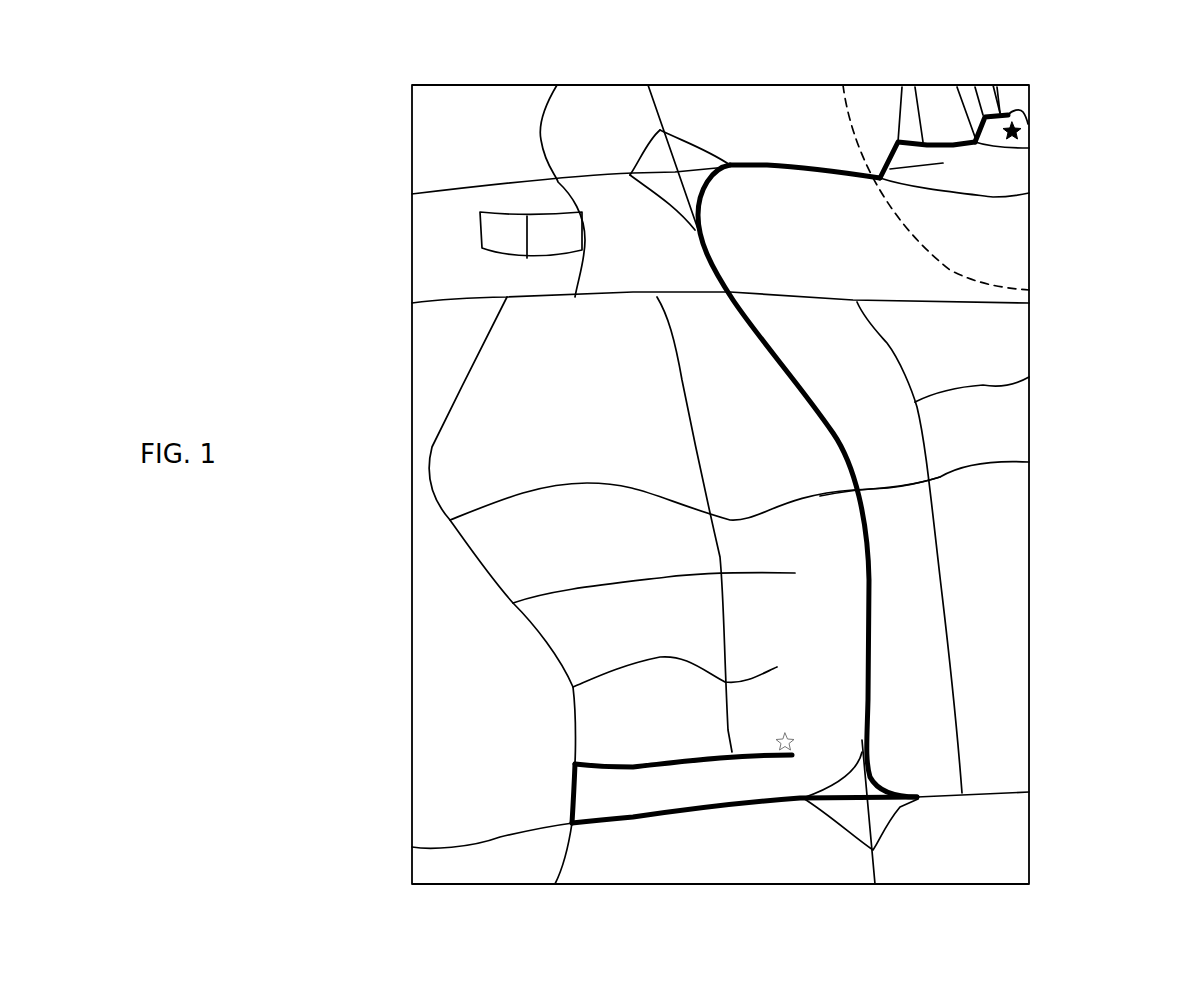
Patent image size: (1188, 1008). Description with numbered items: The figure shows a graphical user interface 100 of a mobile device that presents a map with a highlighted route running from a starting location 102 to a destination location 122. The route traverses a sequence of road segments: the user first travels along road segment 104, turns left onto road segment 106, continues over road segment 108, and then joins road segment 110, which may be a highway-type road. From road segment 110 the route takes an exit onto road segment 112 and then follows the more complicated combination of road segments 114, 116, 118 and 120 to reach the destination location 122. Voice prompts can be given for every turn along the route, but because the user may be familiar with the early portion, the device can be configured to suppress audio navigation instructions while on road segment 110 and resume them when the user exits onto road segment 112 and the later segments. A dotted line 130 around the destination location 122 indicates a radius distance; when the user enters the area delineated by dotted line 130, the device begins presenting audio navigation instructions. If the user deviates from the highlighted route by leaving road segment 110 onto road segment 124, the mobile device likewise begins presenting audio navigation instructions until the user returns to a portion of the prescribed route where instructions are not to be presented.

The graphical user interface 100 is at (1133, 302).
The starting location 102 is at (790, 731).
The road segment 104 is at (680, 757).
The road segment 106 is at (573, 801).
The road segment 108 is at (735, 803).
The road segment 110 is at (838, 457).
The road segment 112 is at (753, 165).
The road segment 114 is at (943, 163).
The road segment 116 is at (917, 85).
The road segment 118 is at (957, 85).
The road segment 120 is at (993, 85).
The destination location 122 is at (1020, 130).
The road segment 124 is at (888, 488).
The dotted line 130 is at (922, 256).